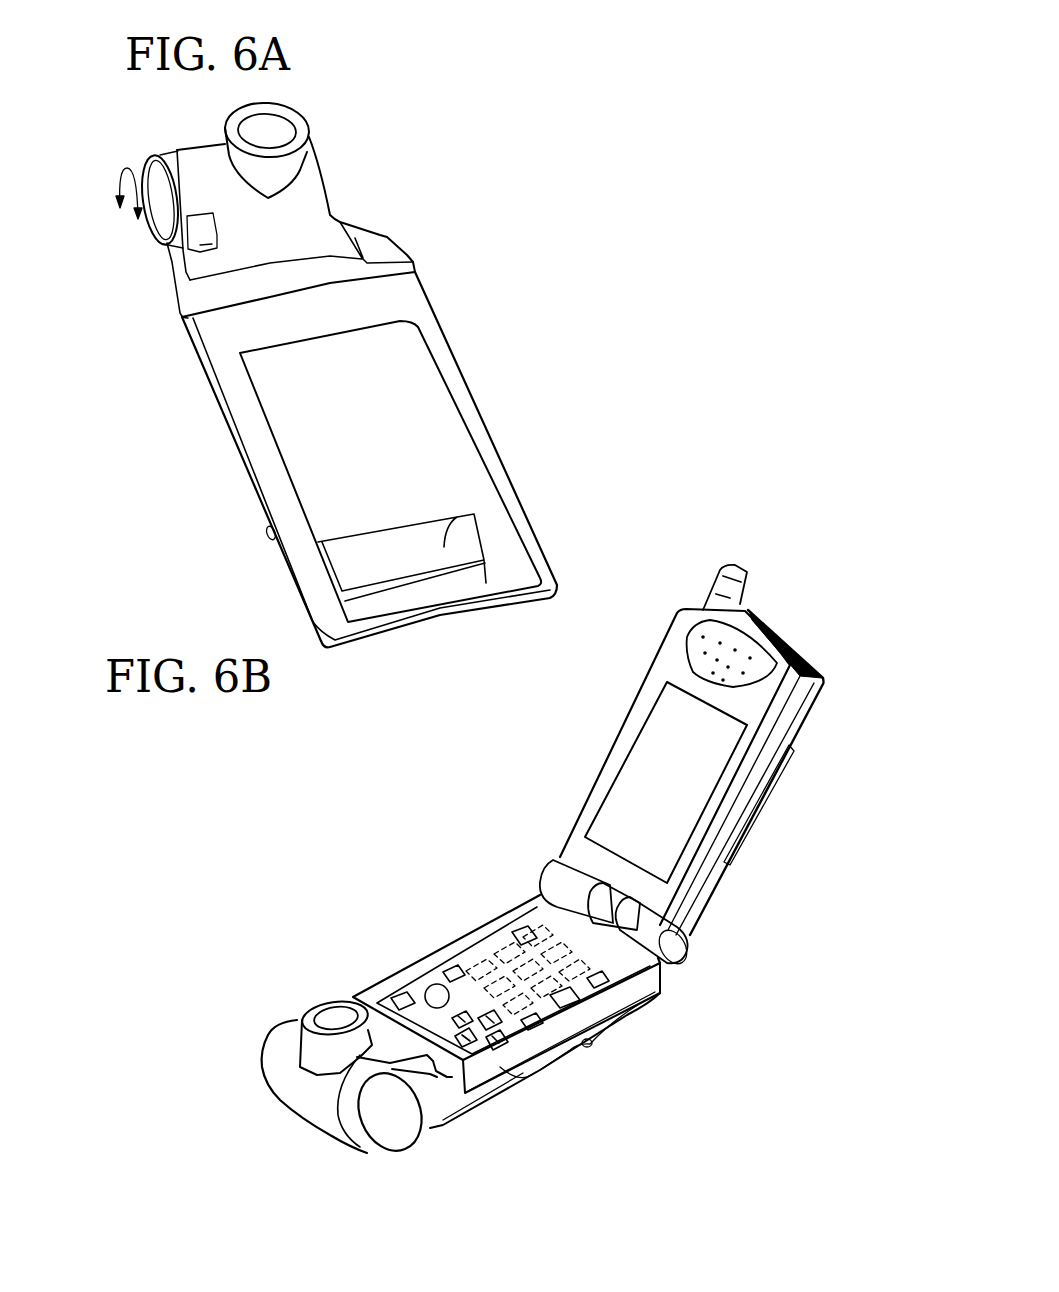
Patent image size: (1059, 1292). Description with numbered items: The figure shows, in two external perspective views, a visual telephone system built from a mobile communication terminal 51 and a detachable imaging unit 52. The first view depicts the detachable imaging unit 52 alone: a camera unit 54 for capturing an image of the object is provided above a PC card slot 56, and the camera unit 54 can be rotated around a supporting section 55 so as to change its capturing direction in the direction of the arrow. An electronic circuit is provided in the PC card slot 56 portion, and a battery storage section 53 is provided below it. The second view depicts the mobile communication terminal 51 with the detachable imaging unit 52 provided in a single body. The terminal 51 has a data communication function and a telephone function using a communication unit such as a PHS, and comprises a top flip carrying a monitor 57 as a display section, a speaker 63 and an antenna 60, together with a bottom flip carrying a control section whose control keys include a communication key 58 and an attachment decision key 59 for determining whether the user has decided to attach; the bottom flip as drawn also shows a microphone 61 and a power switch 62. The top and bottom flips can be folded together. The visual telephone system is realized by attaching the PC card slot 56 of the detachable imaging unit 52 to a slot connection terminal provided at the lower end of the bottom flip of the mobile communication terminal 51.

In FIG. 6B, the mobile communication terminal 51 is at (290, 760).
In FIG. 6A, the detachable imaging unit 52 is at (467, 258).
In FIG. 6B, the detachable imaging unit 52 is at (565, 1078).
In FIG. 6A, the battery storage section 53 is at (447, 517).
In FIG. 6A, the camera unit 54 is at (303, 184).
In FIG. 6A, the supporting section 55 is at (174, 250).
In FIG. 6A, the PC card slot 56 is at (413, 387).
In FIG. 6B, the monitor 57 is at (650, 734).
In FIG. 6B, the communication key 58 is at (525, 927).
In FIG. 6B, the attachment decision key 59 is at (580, 1003).
In FIG. 6B, the antenna 60 is at (745, 568).
In FIG. 6B, the microphone 61 is at (433, 985).
In FIG. 6B, the power switch 62 is at (376, 995).
In FIG. 6B, the speaker 63 is at (707, 637).